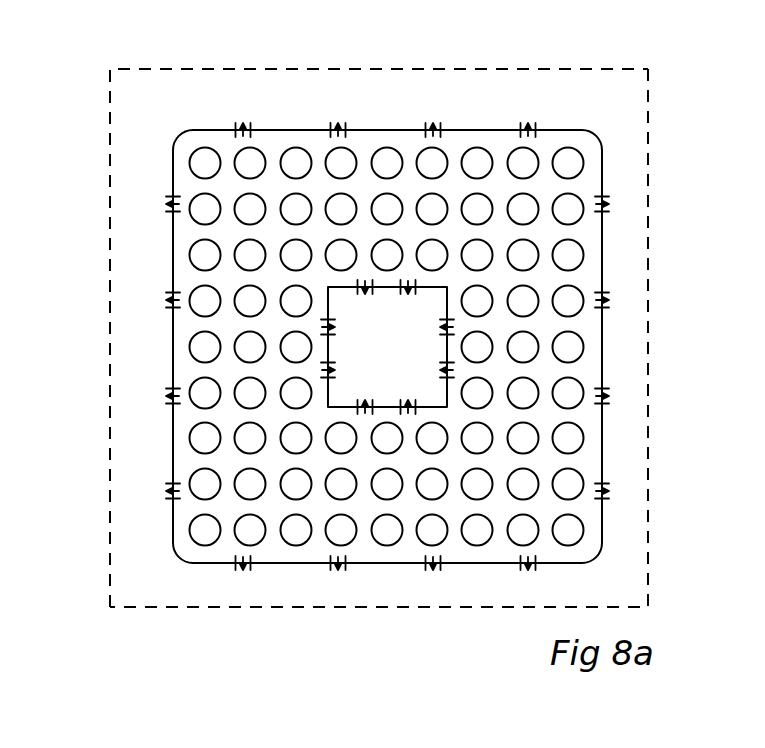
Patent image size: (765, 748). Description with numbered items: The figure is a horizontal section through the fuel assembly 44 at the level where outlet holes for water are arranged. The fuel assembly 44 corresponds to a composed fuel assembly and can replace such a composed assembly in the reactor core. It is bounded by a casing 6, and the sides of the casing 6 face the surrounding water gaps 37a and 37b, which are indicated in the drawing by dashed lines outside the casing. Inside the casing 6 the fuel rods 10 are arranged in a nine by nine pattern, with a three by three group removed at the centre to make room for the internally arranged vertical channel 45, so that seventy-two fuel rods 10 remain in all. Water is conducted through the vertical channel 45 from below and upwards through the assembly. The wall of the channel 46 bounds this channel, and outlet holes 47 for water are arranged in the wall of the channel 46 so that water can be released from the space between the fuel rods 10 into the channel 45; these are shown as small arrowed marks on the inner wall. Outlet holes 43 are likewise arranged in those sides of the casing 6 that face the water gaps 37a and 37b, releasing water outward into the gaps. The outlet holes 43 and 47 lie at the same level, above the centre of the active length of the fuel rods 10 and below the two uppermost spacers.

The casing 6 is at (603, 258).
The openings / holes in array 10 is at (535, 151).
The water gap 37a is at (205, 90).
The water gap 37b is at (632, 329).
The outlet holes 43 is at (170, 302).
The fuel assembly 44 is at (630, 224).
The vertical channel 45 is at (443, 382).
The wall of the channel 46 is at (519, 440).
The outlet holes 47 is at (408, 298).